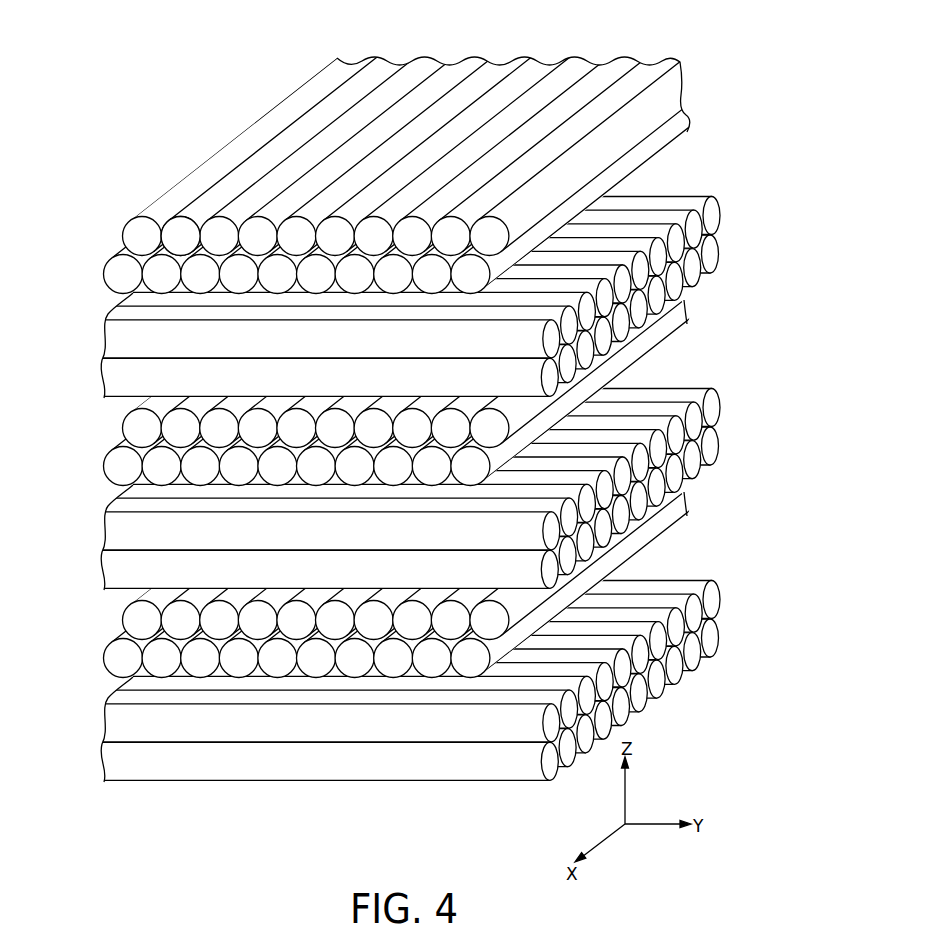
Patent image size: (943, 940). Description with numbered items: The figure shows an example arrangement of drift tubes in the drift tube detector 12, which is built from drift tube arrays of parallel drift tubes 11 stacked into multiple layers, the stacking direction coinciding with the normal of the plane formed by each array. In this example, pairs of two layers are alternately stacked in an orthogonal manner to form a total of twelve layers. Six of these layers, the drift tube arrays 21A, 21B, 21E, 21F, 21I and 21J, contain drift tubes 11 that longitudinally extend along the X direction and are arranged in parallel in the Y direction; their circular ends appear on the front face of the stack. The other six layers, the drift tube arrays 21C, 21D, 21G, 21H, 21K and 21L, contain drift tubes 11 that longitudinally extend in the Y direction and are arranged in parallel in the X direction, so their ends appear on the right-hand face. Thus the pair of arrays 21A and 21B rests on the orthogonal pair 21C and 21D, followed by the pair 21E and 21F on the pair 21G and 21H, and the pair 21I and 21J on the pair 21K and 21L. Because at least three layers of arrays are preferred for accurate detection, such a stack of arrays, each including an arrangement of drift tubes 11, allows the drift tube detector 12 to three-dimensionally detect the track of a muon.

The drift tube 11 is at (182, 214).
The drift tube detector 12 is at (386, 392).
The drift tube array 21A is at (402, 146).
The drift tube array 21B is at (383, 184).
The drift tube array 21C is at (386, 277).
The drift tube array 21D is at (386, 315).
The drift tube array 21E is at (402, 338).
The drift tube array 21F is at (383, 376).
The drift tube array 21G is at (386, 469).
The drift tube array 21H is at (386, 507).
The drift tube array 21I is at (402, 530).
The drift tube array 21J is at (383, 568).
The drift tube array 21K is at (386, 661).
The drift tube array 21L is at (386, 699).